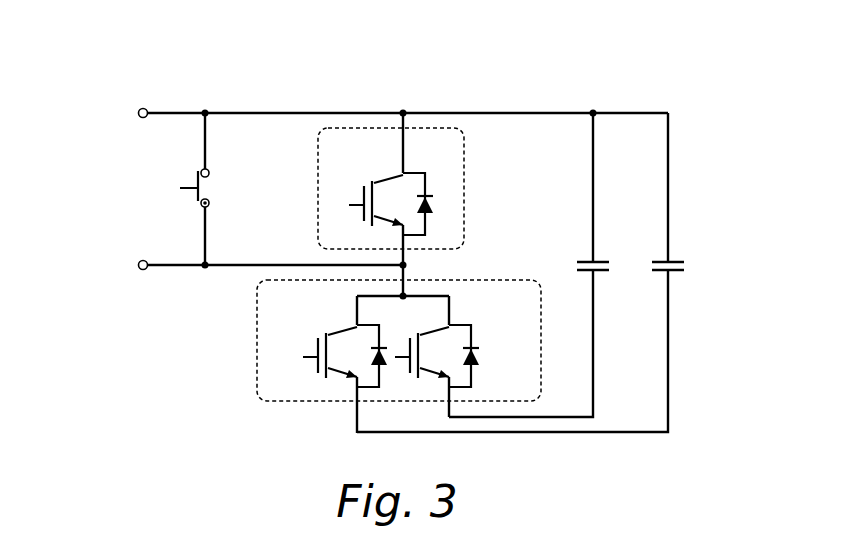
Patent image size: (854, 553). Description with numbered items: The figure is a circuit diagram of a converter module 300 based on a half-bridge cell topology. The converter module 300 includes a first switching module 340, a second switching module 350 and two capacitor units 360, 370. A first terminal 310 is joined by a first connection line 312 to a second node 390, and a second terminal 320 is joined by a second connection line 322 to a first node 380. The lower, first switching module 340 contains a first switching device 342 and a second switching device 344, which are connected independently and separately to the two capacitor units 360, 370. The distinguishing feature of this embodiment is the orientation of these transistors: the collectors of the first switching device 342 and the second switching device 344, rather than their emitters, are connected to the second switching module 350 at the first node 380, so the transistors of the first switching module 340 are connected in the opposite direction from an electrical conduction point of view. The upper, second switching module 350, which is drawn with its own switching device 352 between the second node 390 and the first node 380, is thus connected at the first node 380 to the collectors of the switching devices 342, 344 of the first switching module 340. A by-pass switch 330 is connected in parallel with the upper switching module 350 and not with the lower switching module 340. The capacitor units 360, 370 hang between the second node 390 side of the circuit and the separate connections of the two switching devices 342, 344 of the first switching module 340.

The converter module 300 is at (158, 61).
The first terminal 310 is at (205, 112).
The first connection line 312 is at (288, 112).
The second terminal 320 is at (203, 267).
The second connection line 322 is at (283, 264).
The by-pass switch 330 is at (184, 199).
The first switching module 340 is at (257, 375).
The first switching device 342 is at (311, 329).
The second switching device 344 is at (492, 329).
The second switching module 350 is at (464, 188).
The IGBT with antiparallel diode 352 is at (386, 179).
The capacitor unit 360 is at (670, 260).
The capacitor unit 370 is at (597, 260).
The first node 380 is at (410, 265).
The second node 390 is at (403, 112).